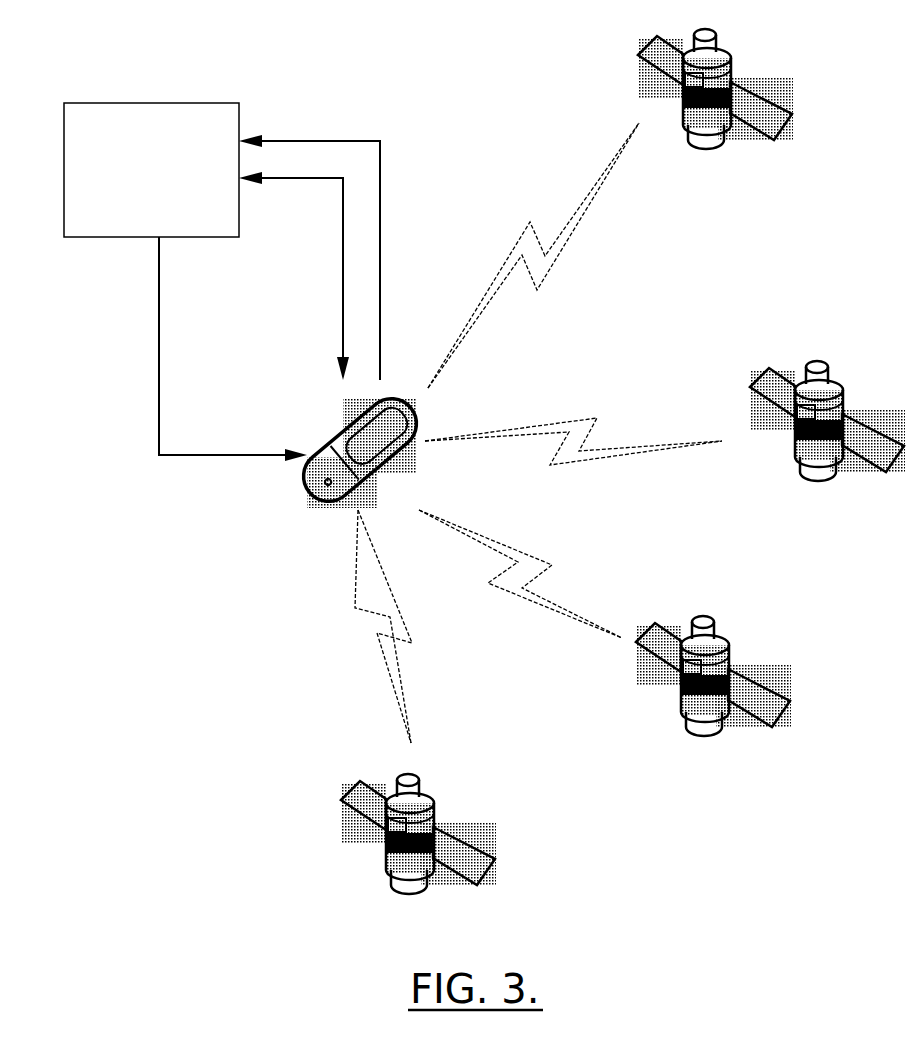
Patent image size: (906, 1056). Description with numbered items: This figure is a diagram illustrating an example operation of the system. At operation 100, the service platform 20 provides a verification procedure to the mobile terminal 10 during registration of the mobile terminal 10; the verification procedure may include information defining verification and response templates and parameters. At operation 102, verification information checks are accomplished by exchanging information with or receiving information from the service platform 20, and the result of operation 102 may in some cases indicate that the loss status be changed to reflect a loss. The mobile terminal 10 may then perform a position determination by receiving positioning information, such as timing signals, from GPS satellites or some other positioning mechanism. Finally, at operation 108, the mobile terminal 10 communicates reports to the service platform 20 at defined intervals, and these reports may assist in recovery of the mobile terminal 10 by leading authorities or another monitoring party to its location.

The mobile terminal 10 is at (332, 505).
The service platform 20 is at (152, 103).
The operation 100 is at (159, 388).
The operation 102 is at (343, 303).
The operation 108 is at (366, 141).